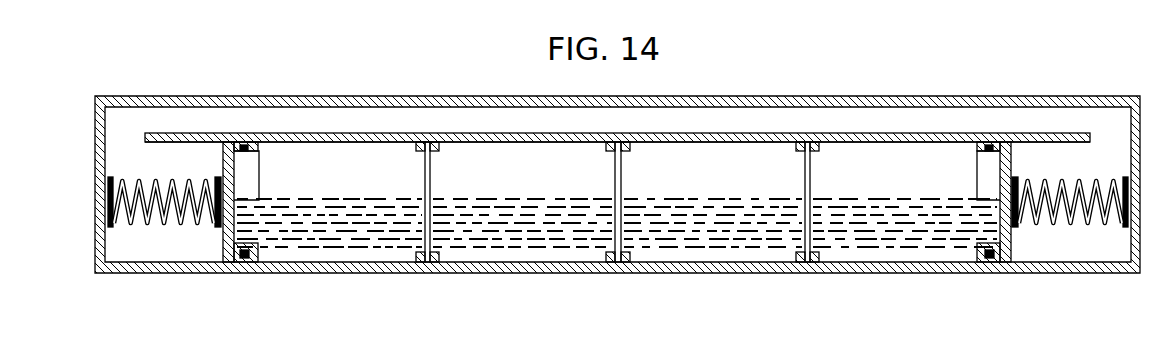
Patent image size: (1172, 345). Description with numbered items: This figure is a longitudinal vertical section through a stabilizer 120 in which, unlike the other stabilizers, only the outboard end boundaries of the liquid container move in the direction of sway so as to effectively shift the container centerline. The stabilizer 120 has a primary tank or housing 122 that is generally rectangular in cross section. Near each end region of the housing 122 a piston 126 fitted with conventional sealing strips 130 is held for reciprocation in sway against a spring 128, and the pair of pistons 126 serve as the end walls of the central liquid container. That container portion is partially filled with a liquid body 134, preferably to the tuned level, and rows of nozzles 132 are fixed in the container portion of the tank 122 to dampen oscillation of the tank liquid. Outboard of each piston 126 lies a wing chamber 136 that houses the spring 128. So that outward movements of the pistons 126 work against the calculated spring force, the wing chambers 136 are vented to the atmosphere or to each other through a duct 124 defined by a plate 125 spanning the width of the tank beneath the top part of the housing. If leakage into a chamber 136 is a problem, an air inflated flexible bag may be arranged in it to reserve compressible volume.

The stabilizer 120 is at (314, 96).
The housing 122 is at (95, 213).
The duct 124 is at (406, 118).
The plate 125 is at (748, 140).
The piston 126 is at (234, 185).
The spring 128 is at (135, 185).
The sealing strip 130 is at (243, 258).
The nozzle 132 is at (430, 172).
The liquid body 134 is at (703, 210).
The wing chamber 136 is at (148, 245).